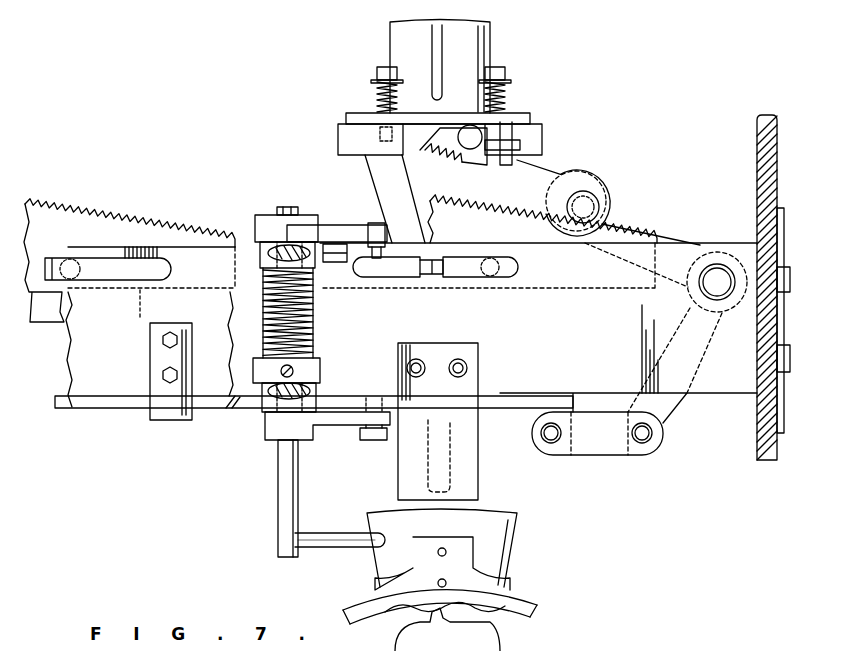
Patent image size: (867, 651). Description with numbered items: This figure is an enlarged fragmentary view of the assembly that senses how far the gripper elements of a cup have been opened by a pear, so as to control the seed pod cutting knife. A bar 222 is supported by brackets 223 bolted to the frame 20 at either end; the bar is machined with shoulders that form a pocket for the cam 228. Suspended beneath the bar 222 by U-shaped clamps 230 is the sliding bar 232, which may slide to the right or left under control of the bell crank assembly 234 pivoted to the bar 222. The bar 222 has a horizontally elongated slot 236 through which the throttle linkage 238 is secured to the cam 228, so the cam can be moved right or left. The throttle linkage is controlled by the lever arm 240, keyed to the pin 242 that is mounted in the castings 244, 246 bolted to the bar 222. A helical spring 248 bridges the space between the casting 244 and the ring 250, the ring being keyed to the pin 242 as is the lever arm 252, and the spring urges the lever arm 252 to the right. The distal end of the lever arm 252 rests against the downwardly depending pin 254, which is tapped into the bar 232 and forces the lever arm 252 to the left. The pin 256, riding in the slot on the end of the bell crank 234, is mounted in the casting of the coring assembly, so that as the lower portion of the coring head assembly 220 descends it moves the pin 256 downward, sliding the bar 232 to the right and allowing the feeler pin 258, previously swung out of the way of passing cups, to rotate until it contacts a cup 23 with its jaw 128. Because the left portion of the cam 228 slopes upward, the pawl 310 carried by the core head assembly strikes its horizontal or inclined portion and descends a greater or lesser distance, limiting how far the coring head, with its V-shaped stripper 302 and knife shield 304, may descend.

The frame 20 is at (764, 337).
The cup assembly 23 is at (516, 580).
The trough-shaped jaw 128 is at (503, 545).
The coring head assembly 220 is at (506, 50).
The bar 222 is at (124, 360).
The brackets 223 is at (780, 405).
The cam 228 is at (97, 233).
The U-shaped clamps 230 is at (156, 386).
The sliding bar 232 is at (103, 410).
The bell crank assembly 234 is at (650, 218).
The horizontally elongated slot 236 is at (162, 275).
The throttle linkage 238 is at (68, 283).
The lever arm 240 is at (327, 228).
The pin 242 is at (290, 207).
The casting 244 is at (258, 246).
The casting 246 is at (264, 405).
The helical spring 248 is at (265, 312).
The ring 250 is at (320, 372).
The lever arm 252 is at (331, 424).
The downwardly depending pin 254 is at (373, 441).
The pin 256 is at (595, 198).
The feeler pin 258 is at (348, 546).
The V-shaped stripper 302 is at (457, 417).
The knife shield 304 is at (452, 480).
The pawl 310 is at (476, 162).